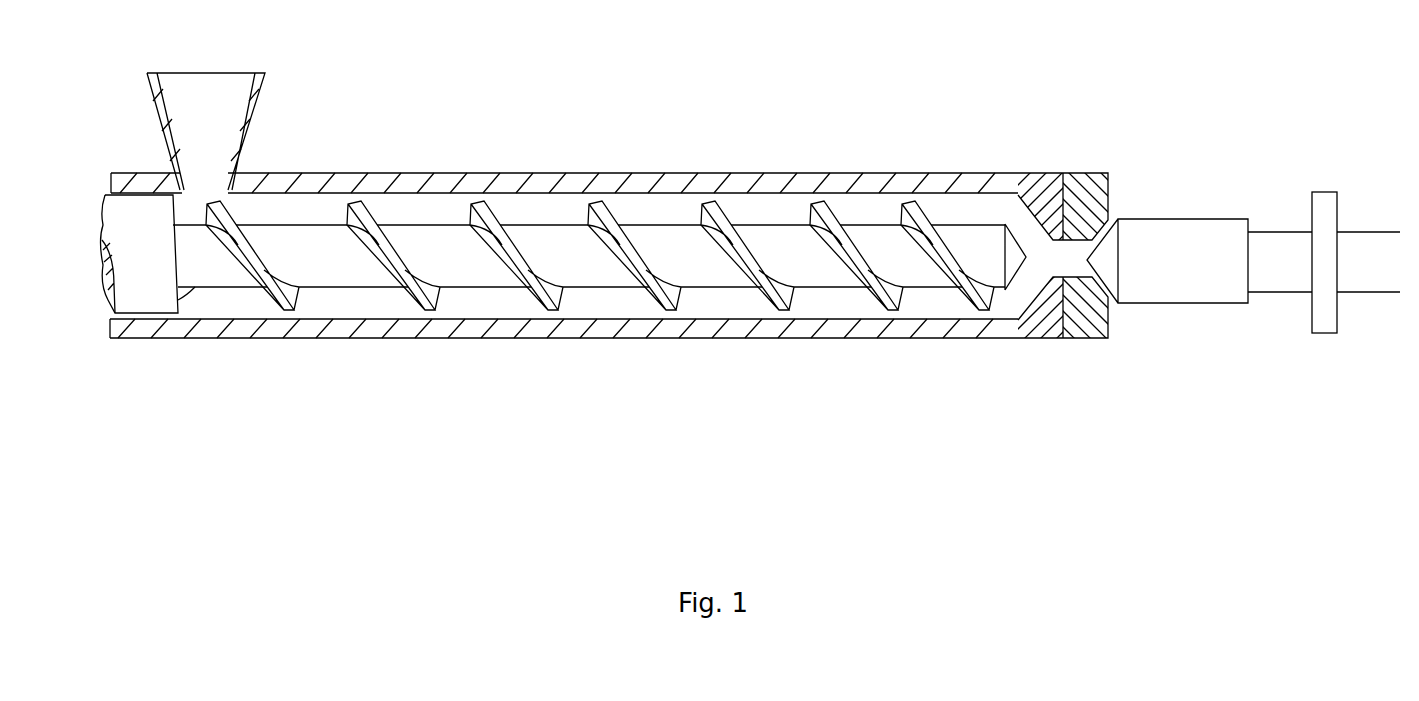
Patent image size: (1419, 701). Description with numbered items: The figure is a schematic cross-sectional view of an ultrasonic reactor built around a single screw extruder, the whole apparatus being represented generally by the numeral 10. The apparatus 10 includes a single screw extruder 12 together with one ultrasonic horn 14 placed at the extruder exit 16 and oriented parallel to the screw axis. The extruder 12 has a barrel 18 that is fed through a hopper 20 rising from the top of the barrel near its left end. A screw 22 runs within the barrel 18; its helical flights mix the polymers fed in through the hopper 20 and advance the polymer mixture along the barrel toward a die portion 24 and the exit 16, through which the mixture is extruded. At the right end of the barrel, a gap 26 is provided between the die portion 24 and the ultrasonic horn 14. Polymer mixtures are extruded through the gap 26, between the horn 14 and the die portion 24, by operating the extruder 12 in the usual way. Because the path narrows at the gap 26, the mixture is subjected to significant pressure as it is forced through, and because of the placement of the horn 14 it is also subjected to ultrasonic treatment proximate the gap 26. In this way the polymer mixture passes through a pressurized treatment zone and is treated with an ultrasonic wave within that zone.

The apparatus 10 is at (729, 143).
The single screw extruder 12 is at (723, 307).
The ultrasonic horn 14 is at (1193, 292).
The extruder exit 16 is at (1070, 258).
The barrel 18 is at (475, 183).
The hopper 20 is at (238, 105).
The screw 22 is at (346, 268).
The die portion 24 is at (1090, 328).
The gap 26 is at (1108, 223).